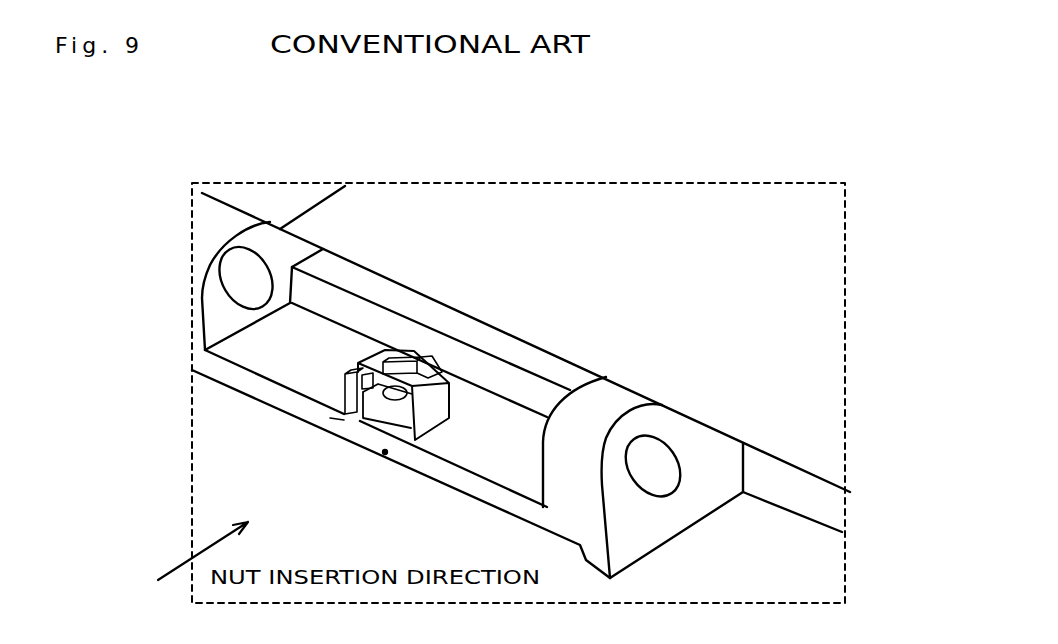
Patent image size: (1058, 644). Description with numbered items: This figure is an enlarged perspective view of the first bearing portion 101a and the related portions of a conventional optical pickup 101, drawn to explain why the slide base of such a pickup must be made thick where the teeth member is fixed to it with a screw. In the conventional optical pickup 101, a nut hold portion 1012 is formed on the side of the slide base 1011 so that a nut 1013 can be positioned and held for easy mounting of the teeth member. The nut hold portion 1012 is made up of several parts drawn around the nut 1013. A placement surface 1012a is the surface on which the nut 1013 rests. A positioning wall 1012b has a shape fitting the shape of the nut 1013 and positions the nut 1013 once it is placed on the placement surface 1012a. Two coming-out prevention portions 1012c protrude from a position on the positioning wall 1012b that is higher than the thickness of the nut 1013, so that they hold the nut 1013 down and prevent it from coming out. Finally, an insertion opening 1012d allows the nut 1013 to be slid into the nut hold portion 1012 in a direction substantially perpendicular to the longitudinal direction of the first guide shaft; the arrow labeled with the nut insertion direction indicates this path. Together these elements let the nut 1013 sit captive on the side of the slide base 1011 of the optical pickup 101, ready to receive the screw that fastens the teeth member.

The optical pickup 101 is at (650, 168).
The first bearing portion 101a is at (198, 230).
The slide base 1011 is at (823, 377).
The nut hold portion 1012 is at (371, 397).
The placement surface 1012a is at (382, 450).
The positioning wall 1012b is at (402, 366).
The coming-out prevention portions 1012c is at (355, 370).
The insertion opening 1012d is at (410, 437).
The nut 1013 is at (345, 420).